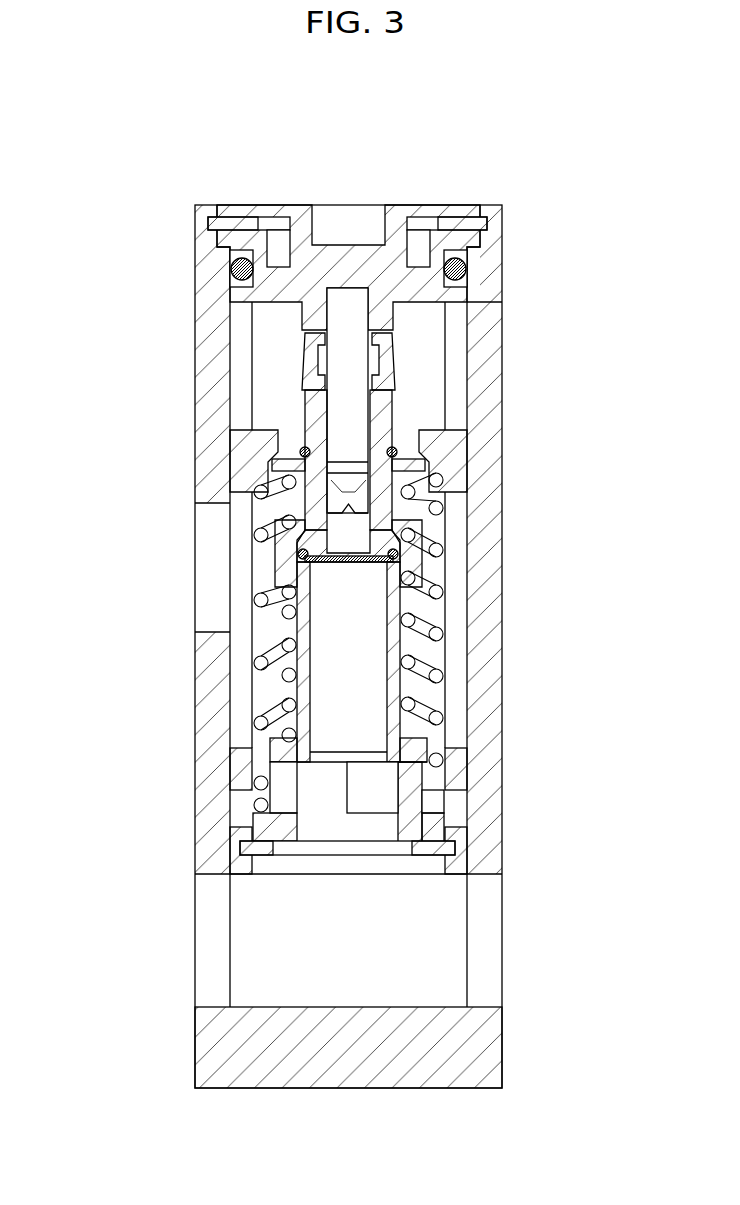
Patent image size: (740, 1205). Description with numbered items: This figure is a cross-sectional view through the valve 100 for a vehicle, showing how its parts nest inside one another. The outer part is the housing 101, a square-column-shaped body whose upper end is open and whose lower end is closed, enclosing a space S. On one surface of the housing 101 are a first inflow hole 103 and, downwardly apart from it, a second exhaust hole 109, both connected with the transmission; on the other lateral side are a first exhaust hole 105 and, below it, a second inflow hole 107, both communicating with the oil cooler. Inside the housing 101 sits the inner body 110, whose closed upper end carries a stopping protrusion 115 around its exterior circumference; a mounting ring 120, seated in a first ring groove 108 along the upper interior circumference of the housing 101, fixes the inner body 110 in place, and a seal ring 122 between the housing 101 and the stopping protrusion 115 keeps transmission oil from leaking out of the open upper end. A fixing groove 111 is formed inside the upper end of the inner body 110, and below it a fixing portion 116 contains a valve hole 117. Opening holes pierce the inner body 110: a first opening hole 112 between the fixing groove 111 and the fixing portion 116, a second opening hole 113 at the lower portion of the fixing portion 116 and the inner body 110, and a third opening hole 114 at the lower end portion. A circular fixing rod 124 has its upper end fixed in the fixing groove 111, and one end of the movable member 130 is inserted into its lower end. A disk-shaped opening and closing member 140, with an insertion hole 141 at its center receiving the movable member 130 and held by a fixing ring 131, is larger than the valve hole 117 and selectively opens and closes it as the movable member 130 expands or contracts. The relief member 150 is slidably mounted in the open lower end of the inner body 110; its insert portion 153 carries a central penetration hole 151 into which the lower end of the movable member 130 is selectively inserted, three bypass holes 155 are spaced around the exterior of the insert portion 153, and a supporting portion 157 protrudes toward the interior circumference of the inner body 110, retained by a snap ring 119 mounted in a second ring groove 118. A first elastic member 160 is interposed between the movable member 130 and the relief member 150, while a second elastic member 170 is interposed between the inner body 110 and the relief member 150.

The valve for vehicle 100 is at (522, 152).
The housing 101 is at (240, 690).
The first inflow hole 103 is at (210, 598).
The first exhaust hole 105 is at (484, 325).
The second inflow hole 107 is at (488, 985).
The first ring groove 108 is at (232, 222).
The second exhaust hole 109 is at (210, 982).
The inner body 110 is at (245, 548).
The fixing groove 111 is at (348, 300).
The first opening hole 112 is at (250, 343).
The second opening hole 113 is at (462, 691).
The third opening hole 114 is at (462, 826).
The stopping protrusion 115 is at (470, 240).
The fixing portion 116 is at (450, 412).
The valve hole 117 is at (283, 437).
The second ring groove 118 is at (443, 850).
The snap ring 119 is at (238, 842).
The mounting ring 120 is at (458, 217).
The seal ring 122 is at (466, 268).
The fixing rod 124 is at (362, 352).
The movable member 130 is at (432, 582).
The fixing ring 131 is at (400, 456).
The opening and closing member 140 is at (275, 468).
The insertion hole 141 is at (378, 482).
The relief member 150 is at (567, 737).
The penetration hole 151 is at (302, 826).
The insert portion 153 is at (440, 750).
The bypass hole 155 is at (277, 772).
The supporting portion 157 is at (432, 792).
The first elastic member 160 is at (412, 622).
The second elastic member 170 is at (432, 668).
The space S is at (403, 956).